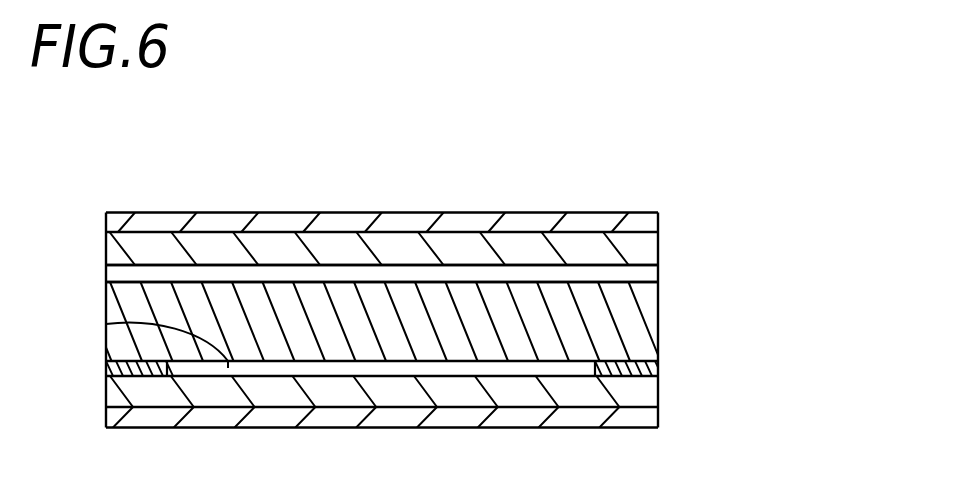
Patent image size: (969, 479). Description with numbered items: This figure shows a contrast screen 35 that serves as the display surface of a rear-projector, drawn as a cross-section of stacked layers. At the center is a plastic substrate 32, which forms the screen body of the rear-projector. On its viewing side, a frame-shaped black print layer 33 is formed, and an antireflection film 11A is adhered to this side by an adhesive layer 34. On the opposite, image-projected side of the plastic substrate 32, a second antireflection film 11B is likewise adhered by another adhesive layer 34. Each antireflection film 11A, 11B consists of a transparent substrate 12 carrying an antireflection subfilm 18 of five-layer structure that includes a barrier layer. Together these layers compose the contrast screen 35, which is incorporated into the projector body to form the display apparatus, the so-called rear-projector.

The contrast screen 35 is at (238, 148).
The antireflection film 11A is at (749, 352).
The antireflection film 11B is at (750, 190).
The antireflection subfilm 18 is at (658, 212).
The transparent substrate 12 is at (658, 248).
The plastic substrate 32 is at (658, 326).
The frame-shaped black print layer 33 is at (107, 367).
The adhesive layer 34 is at (123, 275).